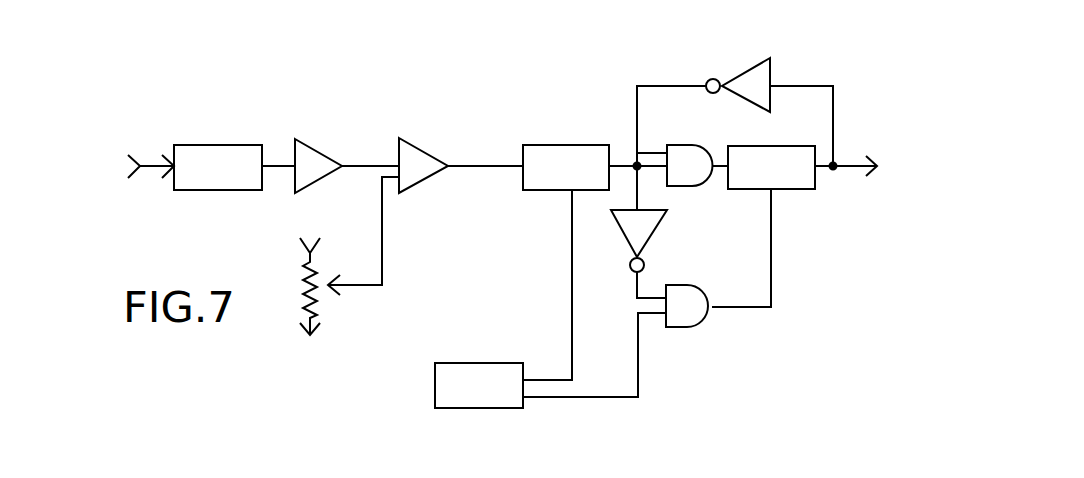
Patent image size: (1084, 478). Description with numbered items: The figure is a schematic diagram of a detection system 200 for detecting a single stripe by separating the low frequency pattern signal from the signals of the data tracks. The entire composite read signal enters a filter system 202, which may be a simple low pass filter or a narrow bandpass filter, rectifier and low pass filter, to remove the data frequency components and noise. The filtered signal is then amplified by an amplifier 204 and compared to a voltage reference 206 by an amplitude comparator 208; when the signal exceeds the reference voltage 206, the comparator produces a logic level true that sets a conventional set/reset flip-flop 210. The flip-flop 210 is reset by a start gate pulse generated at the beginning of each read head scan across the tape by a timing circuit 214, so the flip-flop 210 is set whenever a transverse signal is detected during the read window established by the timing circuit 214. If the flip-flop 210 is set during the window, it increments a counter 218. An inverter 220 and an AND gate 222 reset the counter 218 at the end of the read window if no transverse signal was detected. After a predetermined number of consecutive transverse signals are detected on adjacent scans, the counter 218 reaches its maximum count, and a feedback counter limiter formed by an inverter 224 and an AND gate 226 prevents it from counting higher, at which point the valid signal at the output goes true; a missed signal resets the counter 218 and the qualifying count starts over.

The detection system 200 is at (538, 93).
The filter system 202 is at (215, 143).
The amplifier 204 is at (320, 150).
The voltage reference 206 is at (360, 350).
The amplitude comparator 208 is at (425, 148).
The set/reset flip-flop 210 is at (538, 145).
The timing circuit 214 is at (475, 408).
The counter 218 is at (806, 190).
The inverter 220 is at (658, 226).
The AND gate 222 is at (698, 327).
The inverter 224 is at (770, 73).
The AND gate 226 is at (682, 143).